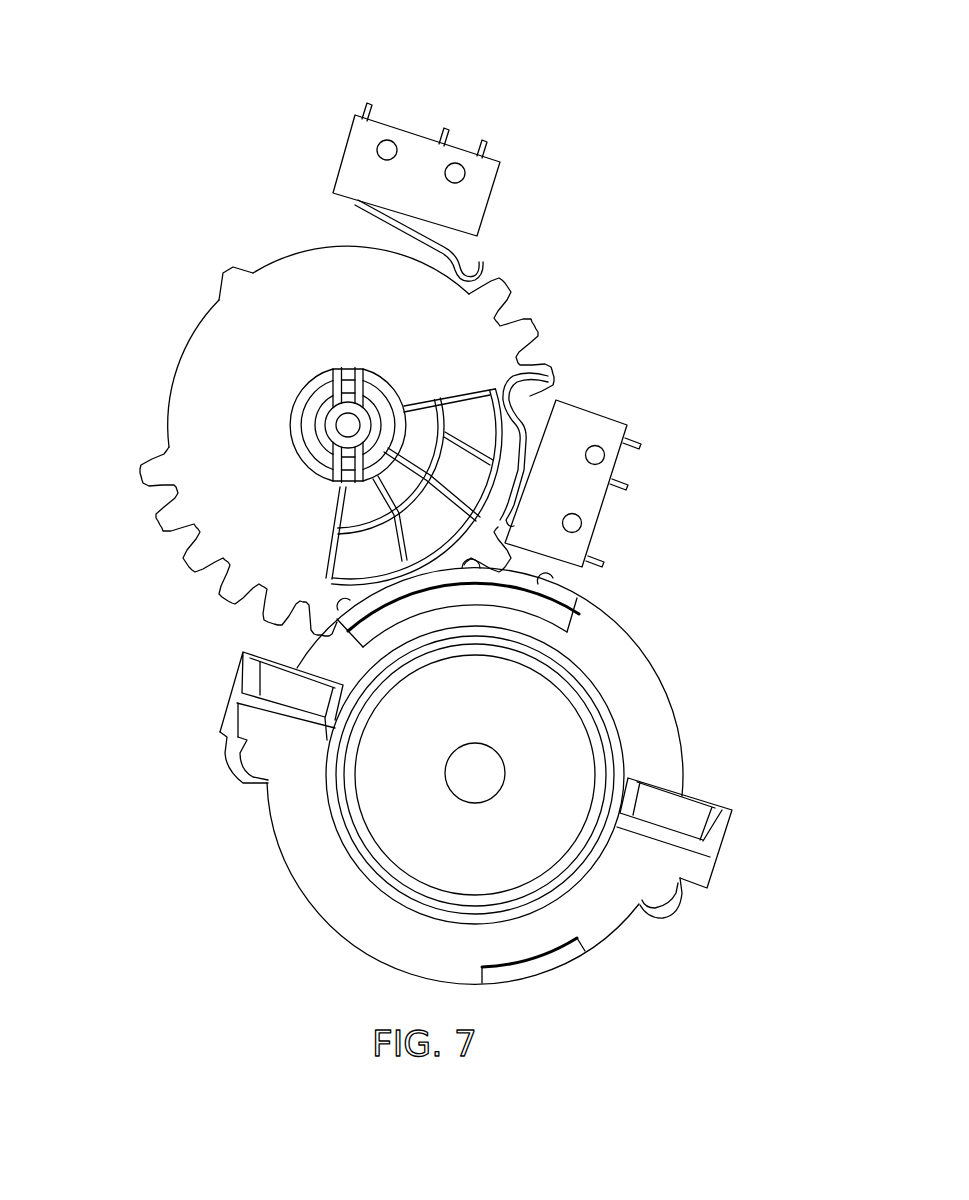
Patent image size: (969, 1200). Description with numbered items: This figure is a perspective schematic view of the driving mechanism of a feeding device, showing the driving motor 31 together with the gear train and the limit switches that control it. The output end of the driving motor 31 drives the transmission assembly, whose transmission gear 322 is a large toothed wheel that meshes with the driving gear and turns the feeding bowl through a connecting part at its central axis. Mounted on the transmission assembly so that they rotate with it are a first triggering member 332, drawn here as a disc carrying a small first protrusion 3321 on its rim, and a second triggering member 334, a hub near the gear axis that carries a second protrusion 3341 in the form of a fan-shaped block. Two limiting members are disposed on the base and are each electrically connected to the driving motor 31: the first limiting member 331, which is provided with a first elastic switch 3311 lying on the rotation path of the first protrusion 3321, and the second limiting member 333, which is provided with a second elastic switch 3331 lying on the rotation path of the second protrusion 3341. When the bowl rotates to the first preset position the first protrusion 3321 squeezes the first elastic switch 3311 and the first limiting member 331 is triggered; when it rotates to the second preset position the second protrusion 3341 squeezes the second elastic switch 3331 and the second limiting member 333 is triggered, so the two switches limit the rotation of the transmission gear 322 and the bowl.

The driving motor 31 is at (290, 856).
The transmission gear 322 is at (168, 523).
The first limiting member 331 is at (427, 138).
The first elastic switch 3311 is at (483, 265).
The first triggering member 332 is at (233, 281).
The first protrusion 3321 is at (226, 268).
The second limiting member 333 is at (597, 503).
The second elastic switch 3331 is at (547, 377).
The second triggering member 334 is at (498, 422).
The second protrusion 3341 is at (517, 425).